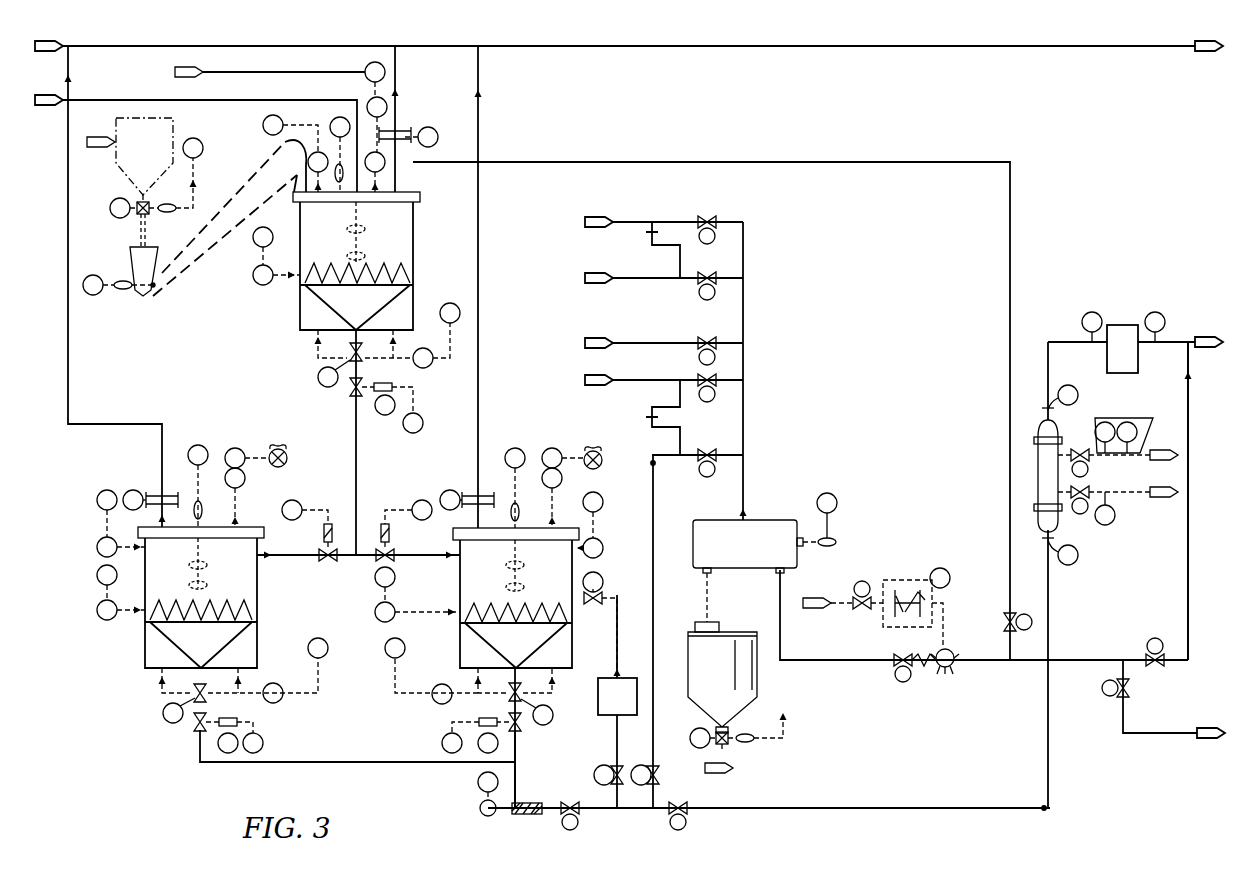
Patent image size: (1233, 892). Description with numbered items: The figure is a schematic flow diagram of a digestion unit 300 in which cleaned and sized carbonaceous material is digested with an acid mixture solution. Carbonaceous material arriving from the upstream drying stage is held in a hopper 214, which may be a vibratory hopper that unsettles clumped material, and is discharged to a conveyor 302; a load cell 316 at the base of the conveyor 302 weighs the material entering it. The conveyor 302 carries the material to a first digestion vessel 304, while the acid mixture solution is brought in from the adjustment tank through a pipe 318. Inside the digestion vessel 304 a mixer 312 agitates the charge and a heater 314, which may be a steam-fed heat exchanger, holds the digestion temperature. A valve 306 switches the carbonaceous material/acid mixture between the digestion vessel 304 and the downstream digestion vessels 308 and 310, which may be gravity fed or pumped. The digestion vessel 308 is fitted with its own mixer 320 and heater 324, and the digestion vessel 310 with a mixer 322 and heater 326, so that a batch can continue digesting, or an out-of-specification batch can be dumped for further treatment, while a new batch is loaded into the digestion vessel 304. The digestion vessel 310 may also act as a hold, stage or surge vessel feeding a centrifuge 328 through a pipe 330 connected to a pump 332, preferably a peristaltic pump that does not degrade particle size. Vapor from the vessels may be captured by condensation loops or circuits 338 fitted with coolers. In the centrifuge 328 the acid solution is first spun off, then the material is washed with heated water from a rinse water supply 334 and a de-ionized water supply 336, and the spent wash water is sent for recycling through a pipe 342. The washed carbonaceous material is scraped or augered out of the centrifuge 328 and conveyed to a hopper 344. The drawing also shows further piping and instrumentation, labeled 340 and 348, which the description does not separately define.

The digestion unit 300 is at (112, 772).
The hopper 214 is at (159, 157).
The conveyor 302 is at (204, 252).
The digestion vessel 304 is at (414, 232).
The valve 306 is at (354, 560).
The digestion vessel 308 is at (258, 594).
The digestion vessel 310 is at (460, 585).
The mixer 312 is at (352, 240).
The heater 314 is at (404, 270).
The load cell 316 is at (130, 272).
The pipe 318 is at (150, 100).
The mixer 320 is at (230, 562).
The mixer 322 is at (500, 577).
The heater 324 is at (178, 603).
The heater 326 is at (553, 605).
The centrifuge 328 is at (761, 555).
The pipe 330 is at (518, 750).
The pump 332 is at (541, 803).
The rinse water supply 334 is at (632, 383).
The de-ionized water supply 336 is at (650, 221).
The condensation loops or circuits 338 is at (641, 280).
The feed line 340 is at (668, 342).
The pipe 342 is at (850, 661).
The hopper 344 is at (758, 674).
The vent recovery loop 348 is at (1066, 330).